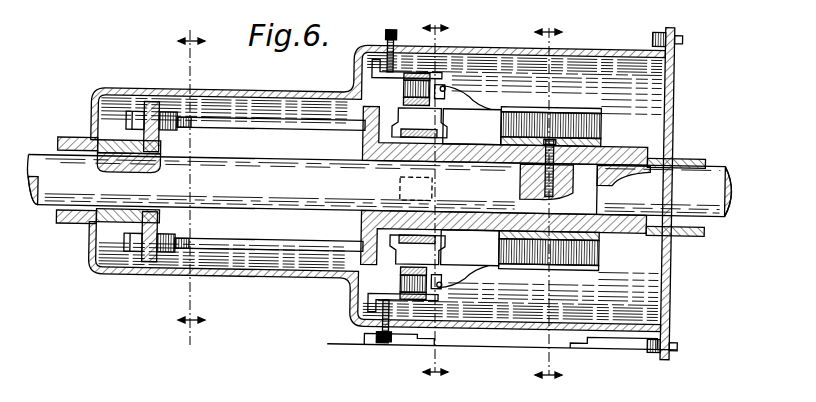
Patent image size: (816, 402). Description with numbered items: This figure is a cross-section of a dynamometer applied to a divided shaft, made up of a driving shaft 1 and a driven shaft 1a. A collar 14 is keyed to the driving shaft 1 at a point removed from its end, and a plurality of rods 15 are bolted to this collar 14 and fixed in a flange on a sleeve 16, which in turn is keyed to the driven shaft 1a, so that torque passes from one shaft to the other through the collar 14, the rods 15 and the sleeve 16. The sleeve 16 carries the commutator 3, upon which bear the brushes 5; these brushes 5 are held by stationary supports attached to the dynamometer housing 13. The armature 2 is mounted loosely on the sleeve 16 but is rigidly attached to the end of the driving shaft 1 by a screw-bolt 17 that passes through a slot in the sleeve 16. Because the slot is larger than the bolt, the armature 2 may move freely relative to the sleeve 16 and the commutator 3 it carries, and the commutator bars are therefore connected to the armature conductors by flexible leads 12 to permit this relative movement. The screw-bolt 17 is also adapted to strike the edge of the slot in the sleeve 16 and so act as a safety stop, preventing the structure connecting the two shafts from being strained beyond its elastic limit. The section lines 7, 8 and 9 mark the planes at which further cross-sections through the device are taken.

The driving shaft 1 is at (47, 192).
The driven shaft 1a is at (697, 192).
The armature 2 is at (603, 126).
The commutator 3 is at (459, 258).
The brushes 5 is at (438, 80).
The section line 7 is at (191, 183).
The section line 8 is at (548, 205).
The section line 9 is at (435, 203).
The flexible leads 12 is at (486, 281).
The dynamometer housing 13 is at (132, 87).
The collar 14 is at (160, 151).
The rods 15 is at (247, 125).
The sleeve 16 is at (377, 152).
The screw-bolt 17 is at (555, 135).